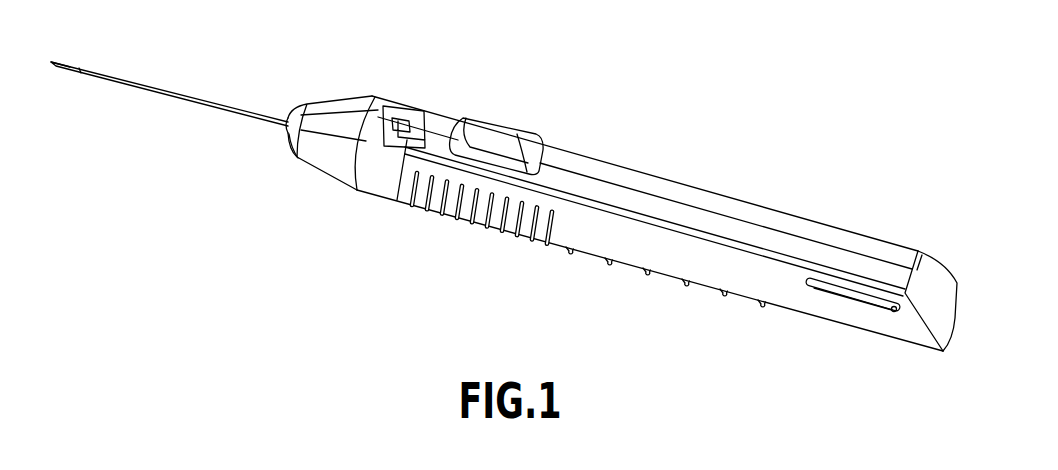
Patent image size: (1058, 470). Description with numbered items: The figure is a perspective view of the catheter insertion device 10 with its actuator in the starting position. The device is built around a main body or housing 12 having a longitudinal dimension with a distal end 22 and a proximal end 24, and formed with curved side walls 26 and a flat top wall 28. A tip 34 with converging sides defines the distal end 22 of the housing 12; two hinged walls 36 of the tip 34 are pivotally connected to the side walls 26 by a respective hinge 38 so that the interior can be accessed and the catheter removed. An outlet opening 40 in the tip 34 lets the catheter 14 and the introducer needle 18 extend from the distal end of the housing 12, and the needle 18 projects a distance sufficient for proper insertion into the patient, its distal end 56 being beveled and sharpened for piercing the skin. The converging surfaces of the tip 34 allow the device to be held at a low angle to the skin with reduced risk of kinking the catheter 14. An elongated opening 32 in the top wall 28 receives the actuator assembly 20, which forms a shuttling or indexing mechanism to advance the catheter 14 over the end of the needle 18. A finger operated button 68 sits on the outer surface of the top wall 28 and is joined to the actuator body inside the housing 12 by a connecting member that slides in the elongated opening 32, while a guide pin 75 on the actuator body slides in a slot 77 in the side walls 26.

The catheter insertion device 10 is at (748, 94).
The housing 12 is at (741, 299).
The catheter 14 is at (190, 95).
The introducer needle 18 is at (72, 58).
The actuator assembly 20 is at (544, 125).
The distal end 22 is at (292, 160).
The proximal end 24 is at (940, 351).
The curved side walls 26 is at (637, 250).
The flat top wall 28 is at (858, 245).
The elongated opening 32 is at (440, 123).
The tip 34 is at (310, 103).
The hinged walls 36 is at (349, 98).
The hinge 38 is at (363, 160).
The outlet opening 40 is at (284, 131).
The distal end of introducer needle 56 is at (58, 67).
The finger operated button 68 is at (505, 128).
The guide pin 75 is at (897, 311).
The slot 77 is at (835, 292).